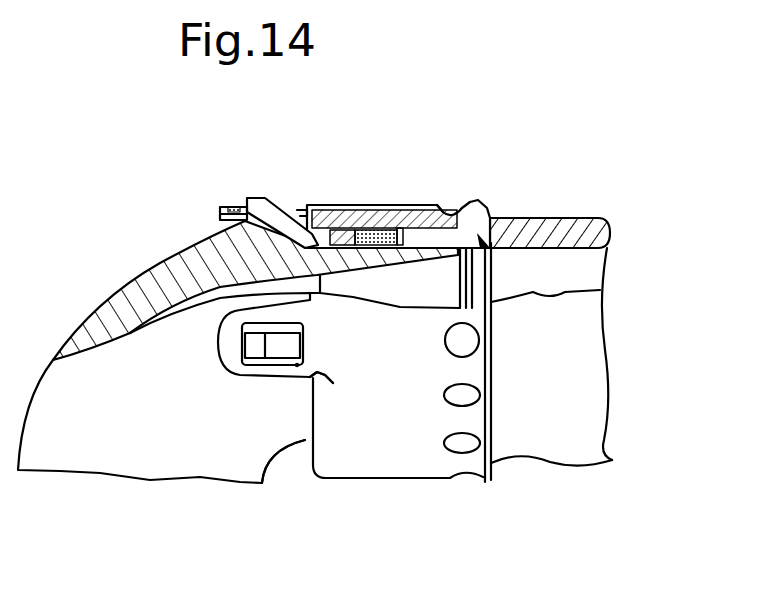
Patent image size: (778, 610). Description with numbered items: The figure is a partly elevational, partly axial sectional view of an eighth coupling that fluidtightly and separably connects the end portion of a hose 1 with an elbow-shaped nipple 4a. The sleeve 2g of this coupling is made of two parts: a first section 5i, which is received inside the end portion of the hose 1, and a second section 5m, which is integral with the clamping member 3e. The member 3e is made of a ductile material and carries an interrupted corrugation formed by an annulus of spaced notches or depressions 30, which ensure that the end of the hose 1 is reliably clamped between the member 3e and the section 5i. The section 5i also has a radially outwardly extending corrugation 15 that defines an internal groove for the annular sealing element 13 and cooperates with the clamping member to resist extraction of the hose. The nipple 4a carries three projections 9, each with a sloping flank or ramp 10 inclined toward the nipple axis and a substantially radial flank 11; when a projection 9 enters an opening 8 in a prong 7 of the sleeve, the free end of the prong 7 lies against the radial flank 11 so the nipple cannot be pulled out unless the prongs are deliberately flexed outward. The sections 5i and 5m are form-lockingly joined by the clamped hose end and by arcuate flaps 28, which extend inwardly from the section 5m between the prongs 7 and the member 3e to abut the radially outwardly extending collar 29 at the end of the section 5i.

The hose 1 is at (577, 218).
The sleeve 2g is at (235, 264).
The clamping member 3e is at (427, 205).
The elbow-shaped nipple 4a is at (173, 257).
The first section of the sleeve 5i is at (347, 255).
The second section of the sleeve 5m is at (313, 210).
The prongs 7 is at (230, 207).
The openings 8 is at (298, 210).
The projections 9 is at (258, 200).
The sloping flank or ramp 10 is at (275, 210).
The radially extending flank 11 is at (242, 207).
The annular sealing element 13 is at (396, 253).
The corrugation 15 is at (401, 228).
The arcuate flaps 28 is at (310, 457).
The collar 29 is at (338, 208).
The notches or depressions 30 is at (465, 343).